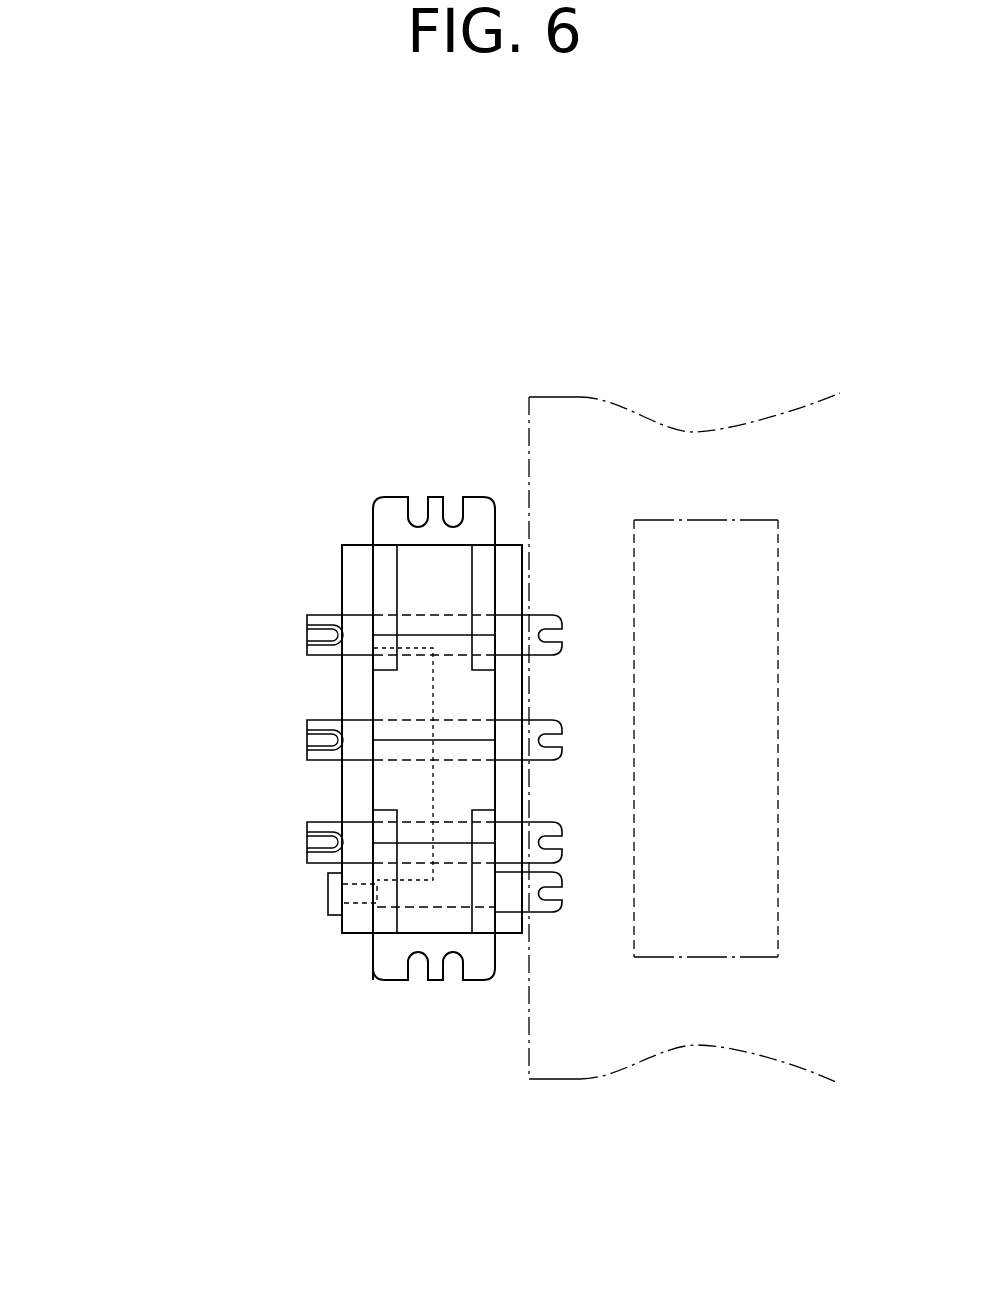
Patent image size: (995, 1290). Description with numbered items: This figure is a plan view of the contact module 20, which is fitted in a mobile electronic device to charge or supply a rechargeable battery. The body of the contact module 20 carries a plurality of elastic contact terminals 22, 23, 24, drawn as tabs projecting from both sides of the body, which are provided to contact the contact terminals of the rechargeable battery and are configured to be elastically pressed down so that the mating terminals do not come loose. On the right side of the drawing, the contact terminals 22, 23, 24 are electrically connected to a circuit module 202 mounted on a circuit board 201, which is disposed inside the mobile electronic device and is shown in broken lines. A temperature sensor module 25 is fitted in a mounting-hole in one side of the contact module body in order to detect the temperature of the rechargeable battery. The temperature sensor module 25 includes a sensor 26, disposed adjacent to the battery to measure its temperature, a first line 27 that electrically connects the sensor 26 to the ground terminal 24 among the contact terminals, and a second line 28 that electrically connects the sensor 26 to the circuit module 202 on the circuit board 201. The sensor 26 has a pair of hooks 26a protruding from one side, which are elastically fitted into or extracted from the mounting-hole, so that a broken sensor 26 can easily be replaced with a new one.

The contact module 20 is at (315, 508).
The elastic contact terminal 22 is at (313, 845).
The elastic contact terminal 23 is at (313, 740).
The ground terminal 24 is at (313, 635).
The temperature sensor module 25 is at (300, 918).
The sensor 26 is at (335, 902).
The hooks 26a is at (360, 903).
The first line 27 is at (433, 682).
The second line 28 is at (440, 910).
The circuit board 201 is at (597, 1033).
The circuit module 202 is at (705, 935).